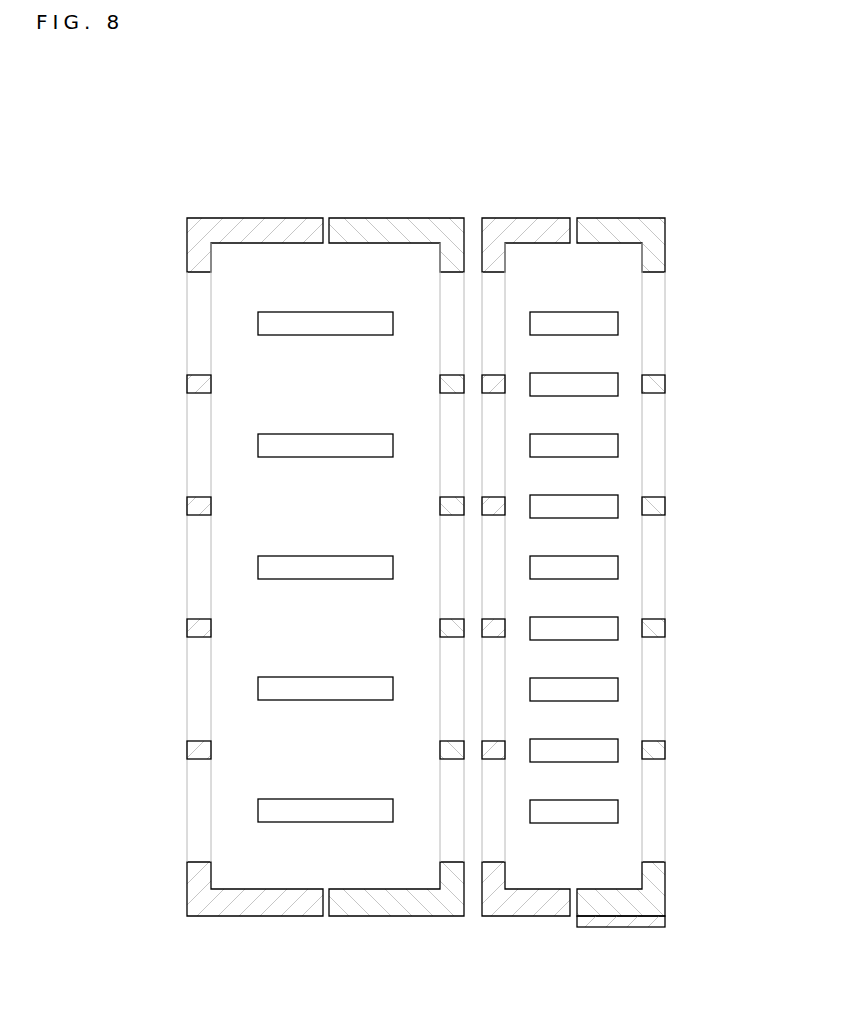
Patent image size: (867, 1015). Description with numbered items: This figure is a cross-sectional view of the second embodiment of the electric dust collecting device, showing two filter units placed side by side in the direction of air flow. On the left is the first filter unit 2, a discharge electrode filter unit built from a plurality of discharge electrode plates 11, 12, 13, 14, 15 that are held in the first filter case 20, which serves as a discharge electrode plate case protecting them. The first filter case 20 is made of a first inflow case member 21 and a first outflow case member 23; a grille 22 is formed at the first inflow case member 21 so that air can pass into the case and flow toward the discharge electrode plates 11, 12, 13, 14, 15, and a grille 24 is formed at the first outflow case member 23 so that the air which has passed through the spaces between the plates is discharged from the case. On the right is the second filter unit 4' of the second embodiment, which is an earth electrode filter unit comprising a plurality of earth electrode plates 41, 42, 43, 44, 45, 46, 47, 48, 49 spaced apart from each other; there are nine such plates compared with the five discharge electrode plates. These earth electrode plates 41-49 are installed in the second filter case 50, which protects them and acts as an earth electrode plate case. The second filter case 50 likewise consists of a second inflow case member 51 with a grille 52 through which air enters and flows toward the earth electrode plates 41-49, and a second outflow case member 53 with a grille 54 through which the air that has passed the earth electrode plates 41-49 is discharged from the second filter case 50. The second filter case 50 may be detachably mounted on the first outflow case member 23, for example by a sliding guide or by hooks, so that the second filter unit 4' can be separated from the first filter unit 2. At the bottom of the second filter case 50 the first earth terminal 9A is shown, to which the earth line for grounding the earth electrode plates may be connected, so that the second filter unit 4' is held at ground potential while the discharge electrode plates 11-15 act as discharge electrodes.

The first filter unit 2 is at (276, 532).
The second filter unit 4' is at (632, 557).
The first earth terminal 9A is at (620, 927).
The discharge electrode plate 11 is at (260, 322).
The discharge electrode plate 12 is at (260, 444).
The discharge electrode plate 13 is at (260, 565).
The discharge electrode plate 14 is at (260, 687).
The discharge electrode plate 15 is at (260, 809).
The first filter case 20 is at (291, 503).
The first inflow case member 21 is at (250, 219).
The grille 22 is at (190, 382).
The first outflow case member 23 is at (352, 219).
The grille 24 is at (457, 382).
The earth electrode plate 41 is at (610, 328).
The earth electrode plate 42 is at (610, 389).
The earth electrode plate 43 is at (610, 450).
The earth electrode plate 44 is at (610, 511).
The earth electrode plate 45 is at (610, 572).
The earth electrode plate 46 is at (610, 633).
The earth electrode plate 47 is at (610, 694).
The earth electrode plate 48 is at (610, 755).
The earth electrode plate 49 is at (610, 816).
The second filter case 50 is at (632, 557).
The second inflow case member 51 is at (549, 230).
The grille 52 is at (495, 383).
The second outflow case member 53 is at (606, 228).
The grille 54 is at (657, 382).